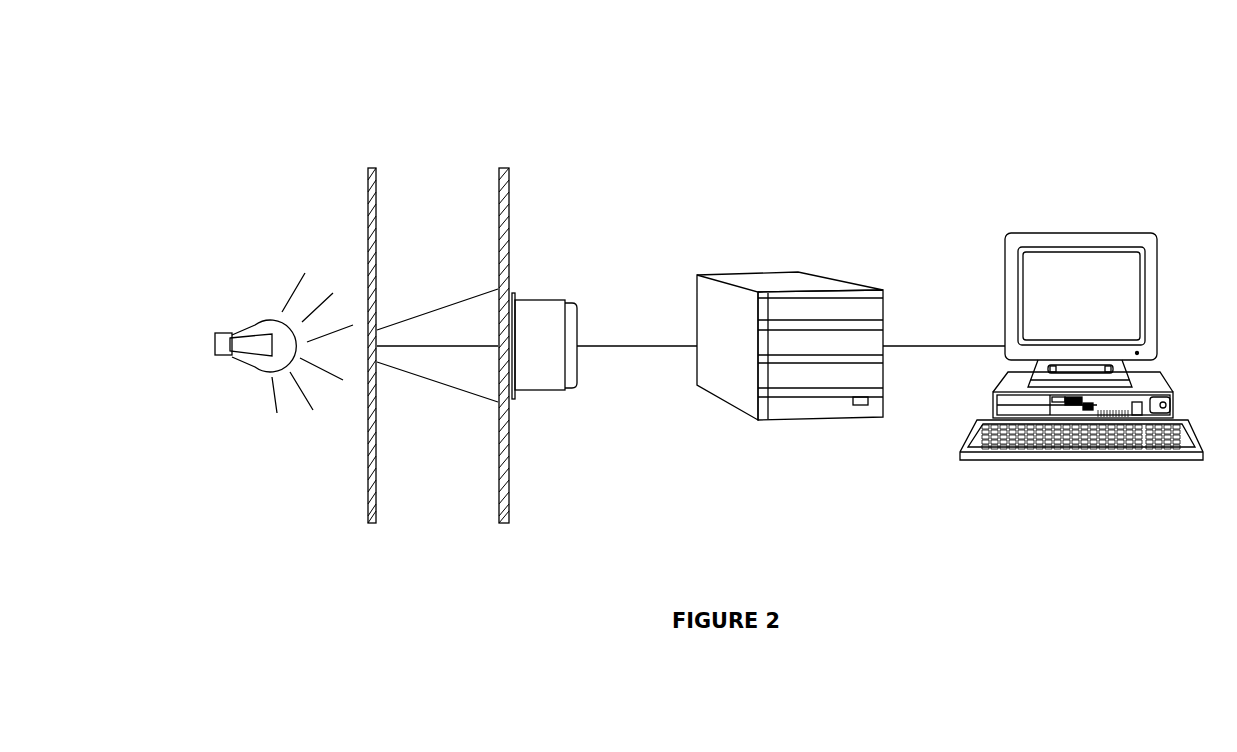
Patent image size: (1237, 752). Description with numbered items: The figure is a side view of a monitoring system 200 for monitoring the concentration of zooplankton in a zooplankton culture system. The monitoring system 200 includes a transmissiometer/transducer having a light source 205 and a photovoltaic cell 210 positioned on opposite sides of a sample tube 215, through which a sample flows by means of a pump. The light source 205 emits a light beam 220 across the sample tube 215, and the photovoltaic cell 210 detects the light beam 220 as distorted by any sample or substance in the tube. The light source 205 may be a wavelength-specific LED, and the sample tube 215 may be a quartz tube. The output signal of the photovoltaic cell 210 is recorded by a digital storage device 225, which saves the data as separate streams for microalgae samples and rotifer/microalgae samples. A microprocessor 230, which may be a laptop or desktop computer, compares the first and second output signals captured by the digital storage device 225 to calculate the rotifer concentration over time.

The monitoring system 200 is at (300, 92).
The light source 205 is at (249, 332).
The photovoltaic cell 210 is at (548, 333).
The sample tube 215 is at (510, 182).
The light beam 220 is at (431, 320).
The digital storage device 225 is at (775, 285).
The microprocessor 230 is at (1073, 272).